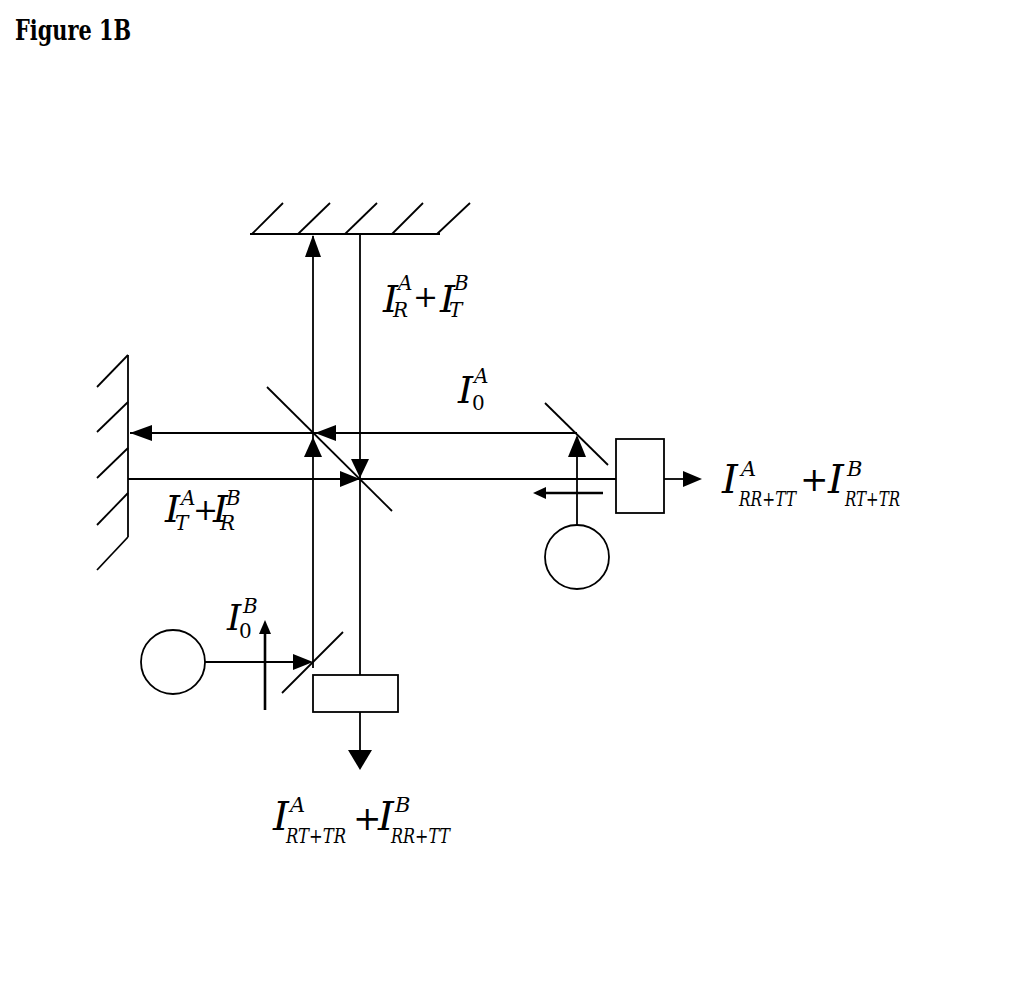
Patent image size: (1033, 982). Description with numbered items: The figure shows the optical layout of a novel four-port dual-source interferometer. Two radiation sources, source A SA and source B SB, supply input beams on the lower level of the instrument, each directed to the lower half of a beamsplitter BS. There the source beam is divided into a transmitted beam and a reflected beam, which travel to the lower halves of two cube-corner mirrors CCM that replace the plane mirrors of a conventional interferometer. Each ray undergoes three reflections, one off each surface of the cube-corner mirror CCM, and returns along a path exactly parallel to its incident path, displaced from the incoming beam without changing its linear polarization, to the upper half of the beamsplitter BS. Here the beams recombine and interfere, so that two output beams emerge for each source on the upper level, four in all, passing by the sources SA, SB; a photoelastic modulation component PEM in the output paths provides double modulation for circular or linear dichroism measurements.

The cube-corner mirror CCM is at (237, 356).
The beamsplitter BS is at (352, 469).
The photoelastic modulation component PEM is at (488, 575).
The radiation source A SA is at (597, 532).
The radiation source B SB is at (222, 682).